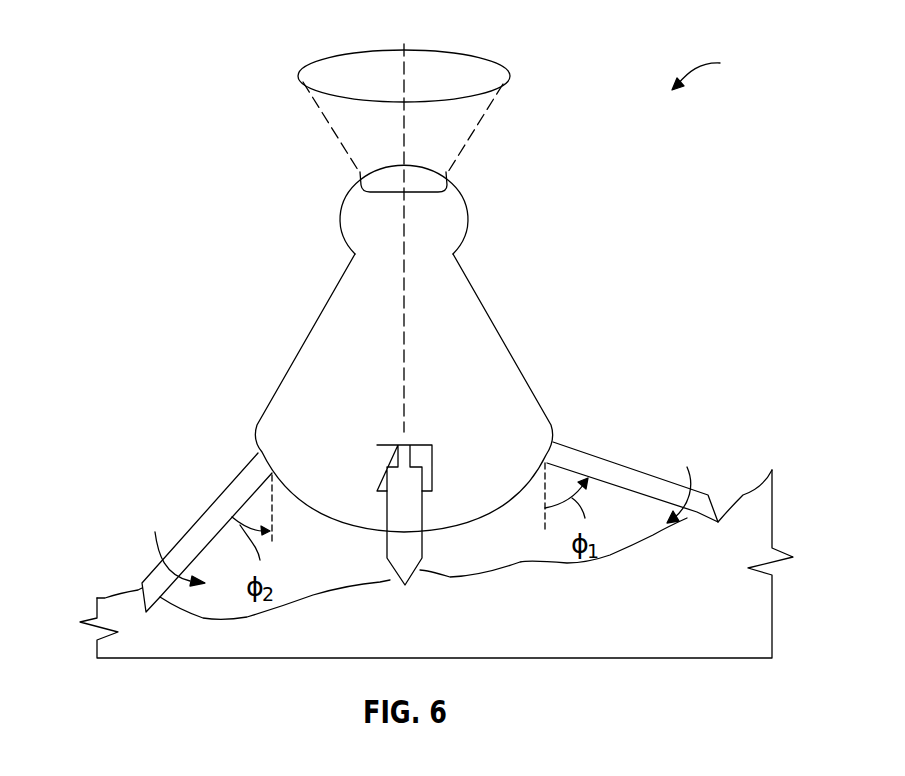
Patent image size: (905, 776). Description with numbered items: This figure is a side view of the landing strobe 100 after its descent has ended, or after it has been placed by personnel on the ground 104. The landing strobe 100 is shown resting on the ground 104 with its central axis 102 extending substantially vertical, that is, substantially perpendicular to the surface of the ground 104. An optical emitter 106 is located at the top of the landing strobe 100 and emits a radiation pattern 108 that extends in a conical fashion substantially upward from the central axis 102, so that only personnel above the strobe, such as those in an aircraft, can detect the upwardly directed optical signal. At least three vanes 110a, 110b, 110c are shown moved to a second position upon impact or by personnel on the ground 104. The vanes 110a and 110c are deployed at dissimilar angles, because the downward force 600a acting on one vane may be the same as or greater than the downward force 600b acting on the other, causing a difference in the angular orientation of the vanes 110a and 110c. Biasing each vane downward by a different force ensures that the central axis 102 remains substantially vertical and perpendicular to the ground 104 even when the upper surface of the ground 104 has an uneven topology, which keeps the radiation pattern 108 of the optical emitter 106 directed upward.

The landing strobe 100 is at (719, 69).
The central axis 102 is at (403, 298).
The ground 104 is at (648, 619).
The optical emitter 106 is at (368, 182).
The radiation pattern 108 is at (507, 85).
The vane 110a is at (227, 488).
The vane 110b is at (420, 556).
The vane 110c is at (600, 453).
The downward force 600a is at (153, 540).
The downward force 600b is at (687, 470).